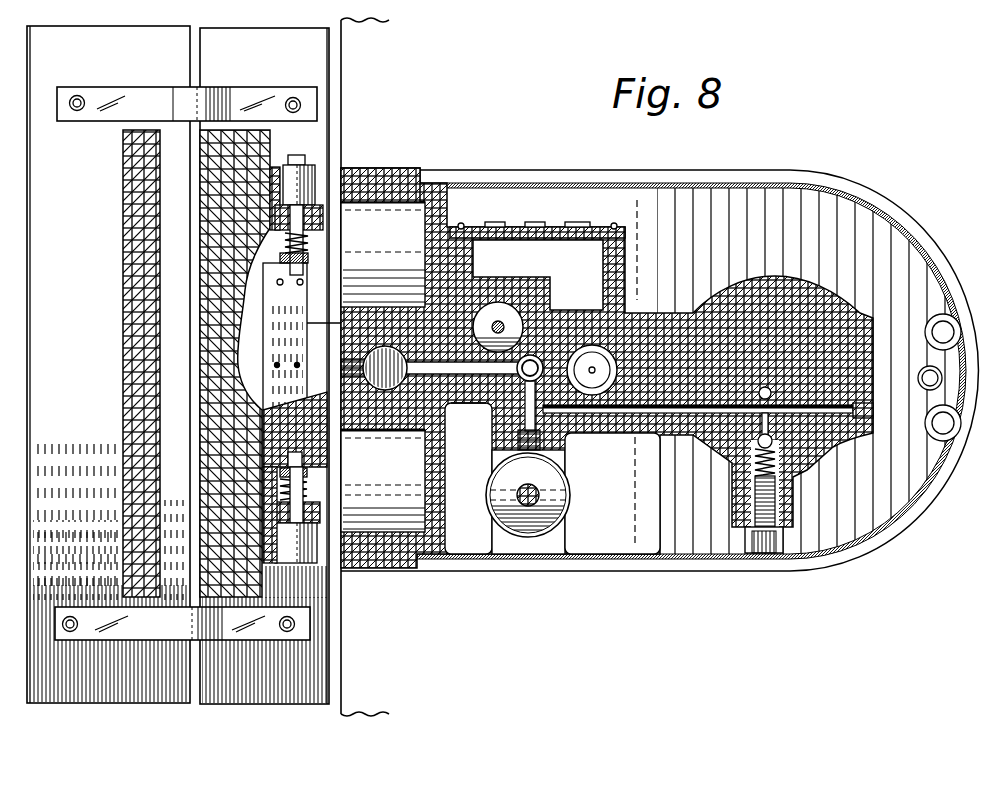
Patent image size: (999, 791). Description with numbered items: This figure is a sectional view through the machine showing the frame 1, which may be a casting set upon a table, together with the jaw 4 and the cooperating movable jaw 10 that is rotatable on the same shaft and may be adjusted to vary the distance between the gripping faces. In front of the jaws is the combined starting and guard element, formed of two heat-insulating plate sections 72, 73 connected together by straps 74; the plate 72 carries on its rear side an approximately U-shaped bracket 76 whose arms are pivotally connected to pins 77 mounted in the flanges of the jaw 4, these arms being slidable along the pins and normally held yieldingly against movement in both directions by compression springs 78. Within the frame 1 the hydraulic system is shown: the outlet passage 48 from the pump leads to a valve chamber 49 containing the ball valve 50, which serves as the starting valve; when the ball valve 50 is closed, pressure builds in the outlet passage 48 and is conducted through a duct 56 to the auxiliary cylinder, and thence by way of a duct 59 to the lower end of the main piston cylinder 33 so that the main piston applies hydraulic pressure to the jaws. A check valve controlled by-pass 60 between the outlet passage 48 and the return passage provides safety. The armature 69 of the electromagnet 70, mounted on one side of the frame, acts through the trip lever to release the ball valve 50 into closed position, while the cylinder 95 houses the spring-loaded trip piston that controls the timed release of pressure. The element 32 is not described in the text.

The frame 1 is at (545, 538).
The jaw 4 is at (238, 378).
The movable jaw 10 is at (123, 350).
The stem 32 is at (593, 392).
The main piston cylinder 33 is at (650, 414).
The outlet passage 48 is at (708, 448).
The valve chamber 49 is at (457, 404).
The ball valve 50 is at (530, 354).
The duct 56 is at (468, 478).
The duct 59 is at (592, 344).
The check valve controlled by-pass 60 is at (728, 462).
The armature 69 is at (518, 502).
The electromagnet 70 is at (497, 496).
The plate section 72 is at (268, 35).
The plate section 73 is at (151, 35).
The straps 74 is at (215, 88).
The U-shaped bracket 76 is at (300, 290).
The pins 77 is at (305, 258).
The compression springs 78 is at (348, 178).
The cylinder 95 is at (498, 320).